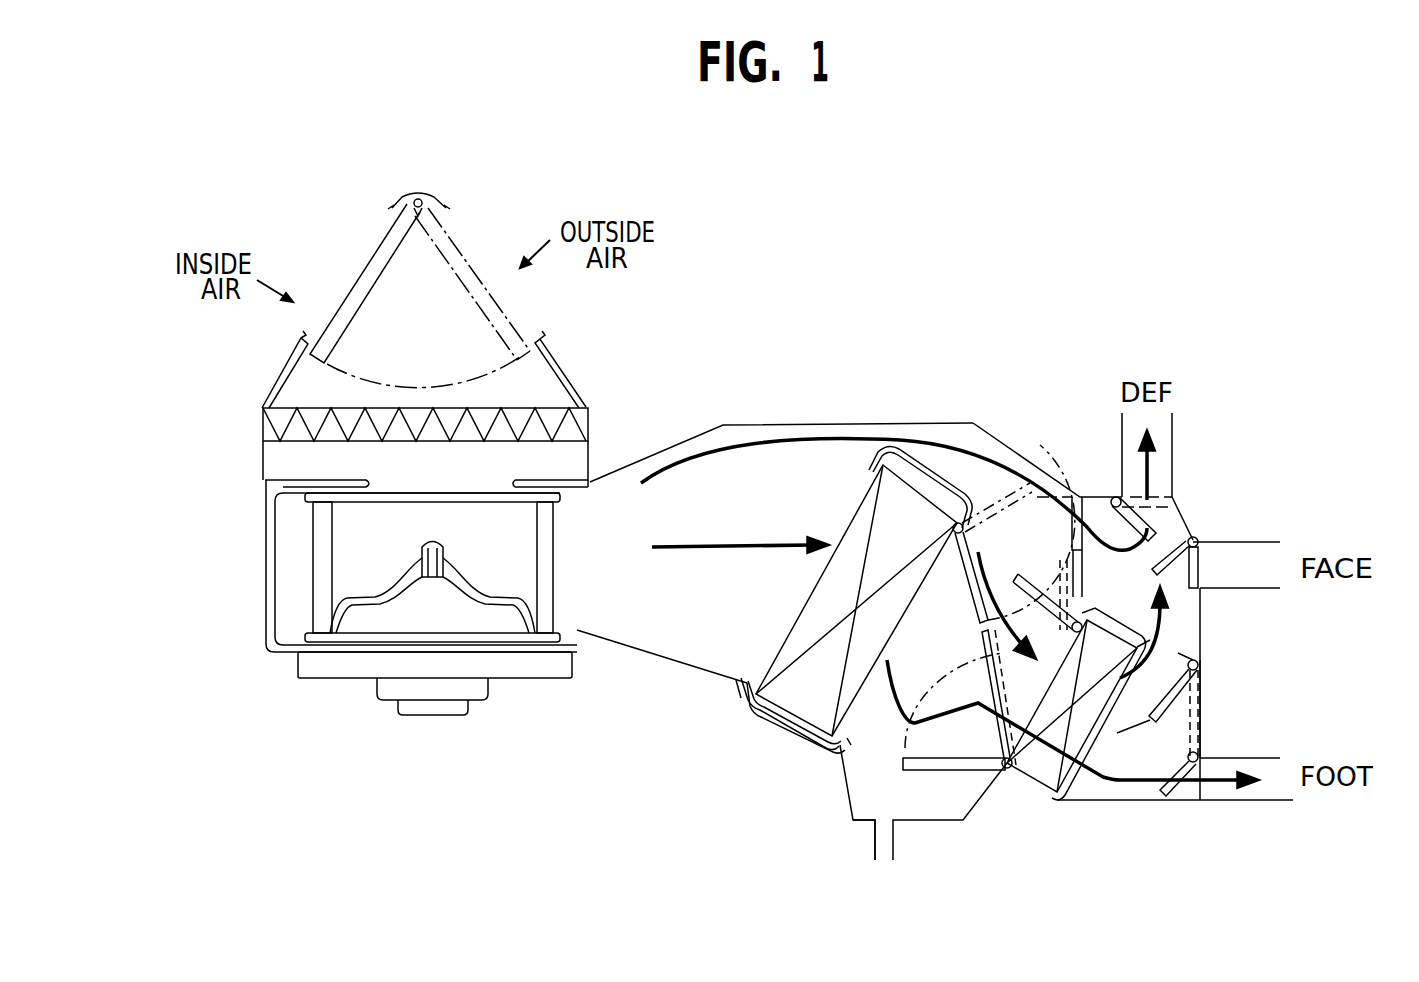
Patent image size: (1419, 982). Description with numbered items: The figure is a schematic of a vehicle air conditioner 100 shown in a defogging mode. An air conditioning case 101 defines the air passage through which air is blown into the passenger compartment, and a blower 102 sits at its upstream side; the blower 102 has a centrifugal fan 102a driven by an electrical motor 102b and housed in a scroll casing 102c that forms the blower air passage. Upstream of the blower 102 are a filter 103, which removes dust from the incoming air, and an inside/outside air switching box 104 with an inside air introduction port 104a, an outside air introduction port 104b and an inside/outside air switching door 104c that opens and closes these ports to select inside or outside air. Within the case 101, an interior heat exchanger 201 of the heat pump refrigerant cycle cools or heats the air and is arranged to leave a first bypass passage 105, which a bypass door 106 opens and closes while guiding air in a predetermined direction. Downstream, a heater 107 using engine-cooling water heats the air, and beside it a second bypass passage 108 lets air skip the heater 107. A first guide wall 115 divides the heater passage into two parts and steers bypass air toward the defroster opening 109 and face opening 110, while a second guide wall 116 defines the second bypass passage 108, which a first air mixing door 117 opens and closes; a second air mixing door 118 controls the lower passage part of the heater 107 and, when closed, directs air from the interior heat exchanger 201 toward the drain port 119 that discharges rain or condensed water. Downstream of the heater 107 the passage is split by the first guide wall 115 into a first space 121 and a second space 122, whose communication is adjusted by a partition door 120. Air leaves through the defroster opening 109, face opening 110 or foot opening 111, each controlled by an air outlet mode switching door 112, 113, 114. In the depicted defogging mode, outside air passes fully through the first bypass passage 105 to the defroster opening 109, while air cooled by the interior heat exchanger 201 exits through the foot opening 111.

The vehicle air conditioner 100 is at (827, 347).
The air conditioning case 101 is at (693, 435).
The blower 102 is at (330, 665).
The centrifugal fan 102a is at (550, 583).
The electrical motor 102b is at (490, 687).
The scroll casing 102c is at (267, 607).
The filter 103 is at (590, 408).
The inside/outside air switching box 104 is at (565, 370).
The inside air introduction port 104a is at (322, 258).
The outside air introduction port 104b is at (466, 208).
The inside/outside air switching door 104c is at (388, 210).
The first bypass passage 105 is at (918, 470).
The bypass door 106 is at (985, 545).
The heater 107 is at (1067, 767).
The second bypass passage 108 is at (1108, 563).
The defroster opening 109 is at (1150, 460).
The face opening 110 is at (1237, 552).
The foot opening 111 is at (1243, 787).
The air outlet mode switching door 112 is at (1173, 500).
The air outlet mode switching door 113 is at (1200, 578).
The air outlet mode switching door 114 is at (1185, 797).
The first guide wall 115 is at (987, 720).
The second guide wall 116 is at (1077, 520).
The first air mixing door 117 is at (1048, 560).
The second air mixing door 118 is at (920, 772).
The drain port 119 is at (873, 835).
The partition door 120 is at (1190, 693).
The first space 121 is at (1178, 653).
The second space 122 is at (1200, 797).
The interior heat exchanger 201 is at (793, 702).